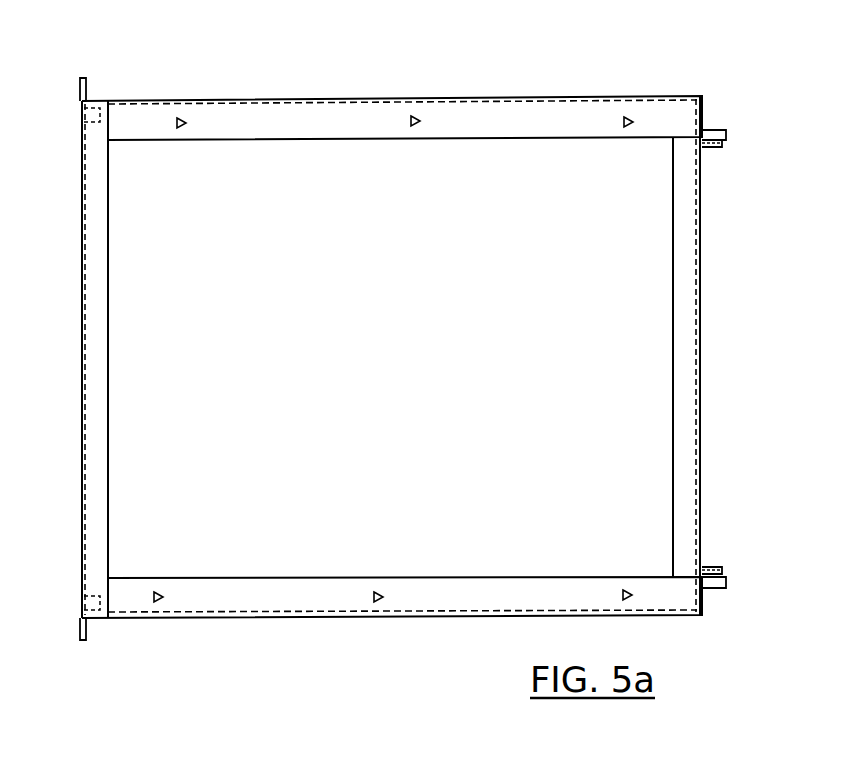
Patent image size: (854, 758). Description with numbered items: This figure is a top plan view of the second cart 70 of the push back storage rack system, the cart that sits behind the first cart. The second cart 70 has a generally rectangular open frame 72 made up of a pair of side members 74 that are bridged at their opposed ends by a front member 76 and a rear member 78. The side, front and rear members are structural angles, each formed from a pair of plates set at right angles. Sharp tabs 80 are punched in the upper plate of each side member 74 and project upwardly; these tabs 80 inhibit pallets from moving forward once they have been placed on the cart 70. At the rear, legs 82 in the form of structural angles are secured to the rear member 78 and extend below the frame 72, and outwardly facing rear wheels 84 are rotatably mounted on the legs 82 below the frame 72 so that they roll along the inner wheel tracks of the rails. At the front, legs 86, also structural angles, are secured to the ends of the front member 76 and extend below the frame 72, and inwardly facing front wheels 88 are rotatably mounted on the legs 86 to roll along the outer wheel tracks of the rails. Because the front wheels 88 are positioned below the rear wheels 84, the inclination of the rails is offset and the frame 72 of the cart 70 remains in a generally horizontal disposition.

The second cart 70 is at (718, 78).
The open frame 72 is at (228, 659).
The side members 74 is at (369, 125).
The front member 76 is at (100, 345).
The rear member 78 is at (690, 378).
The sharp tabs 80 is at (184, 118).
The legs 82 is at (706, 146).
The rear wheels 84 is at (723, 128).
The legs 86 is at (86, 100).
The front wheels 88 is at (90, 118).